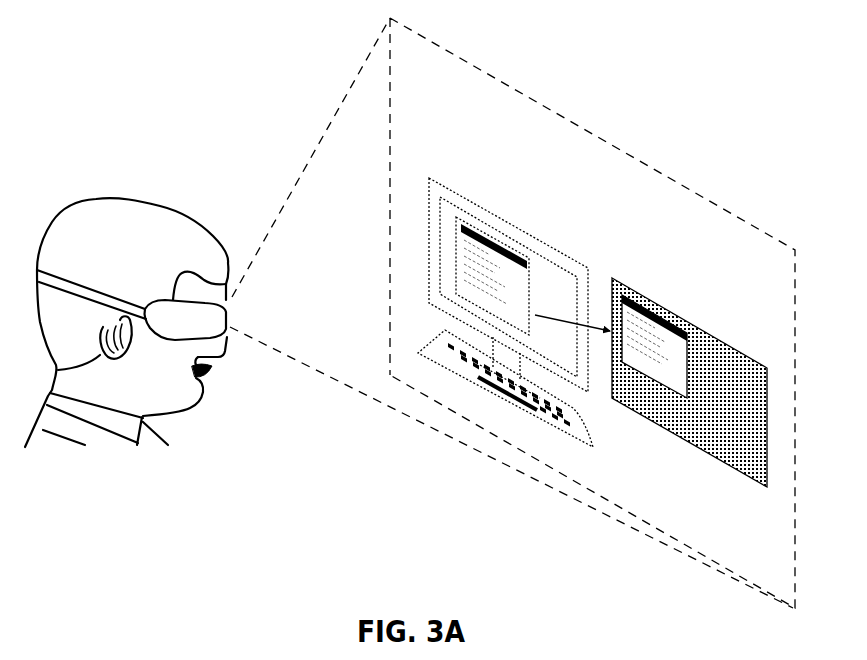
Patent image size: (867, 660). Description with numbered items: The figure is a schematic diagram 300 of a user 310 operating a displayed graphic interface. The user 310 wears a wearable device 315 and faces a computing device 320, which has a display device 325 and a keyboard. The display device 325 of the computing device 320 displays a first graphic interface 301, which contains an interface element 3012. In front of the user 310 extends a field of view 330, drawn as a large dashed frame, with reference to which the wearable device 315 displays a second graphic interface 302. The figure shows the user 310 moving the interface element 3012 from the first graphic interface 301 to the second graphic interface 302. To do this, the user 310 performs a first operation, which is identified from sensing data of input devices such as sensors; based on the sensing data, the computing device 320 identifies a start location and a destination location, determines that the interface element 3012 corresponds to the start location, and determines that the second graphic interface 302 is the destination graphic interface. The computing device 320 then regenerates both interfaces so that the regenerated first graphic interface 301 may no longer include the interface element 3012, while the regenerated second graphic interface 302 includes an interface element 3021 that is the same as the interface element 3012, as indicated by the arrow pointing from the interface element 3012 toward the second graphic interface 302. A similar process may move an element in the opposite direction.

The schematic diagram 300 is at (150, 50).
The user 310 is at (147, 203).
The wearable device 315 is at (220, 320).
The computing device 320 is at (572, 438).
The display device 325 is at (543, 262).
The field of view 330 is at (748, 224).
The first graphic interface 301 is at (508, 297).
The second graphic interface 302 is at (689, 382).
The interface element 3012 is at (517, 307).
The interface element 3021 is at (677, 374).